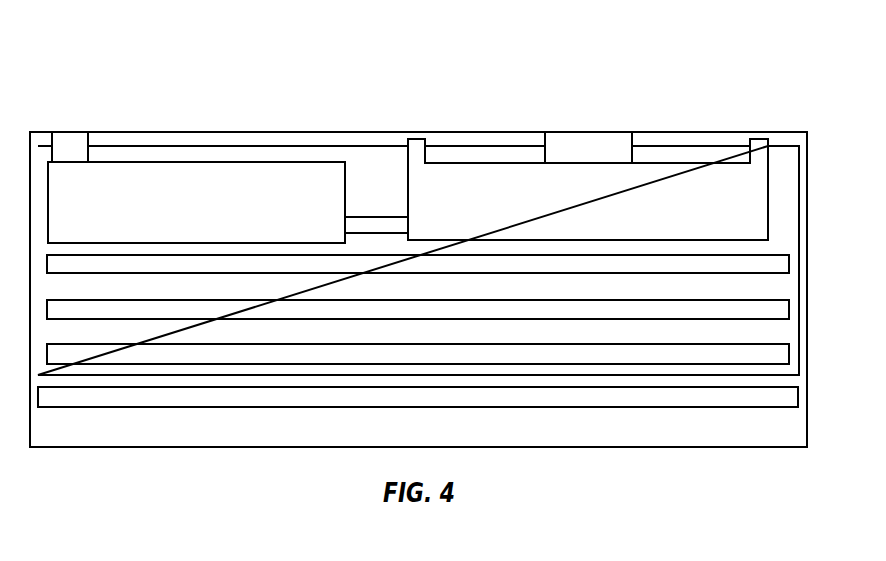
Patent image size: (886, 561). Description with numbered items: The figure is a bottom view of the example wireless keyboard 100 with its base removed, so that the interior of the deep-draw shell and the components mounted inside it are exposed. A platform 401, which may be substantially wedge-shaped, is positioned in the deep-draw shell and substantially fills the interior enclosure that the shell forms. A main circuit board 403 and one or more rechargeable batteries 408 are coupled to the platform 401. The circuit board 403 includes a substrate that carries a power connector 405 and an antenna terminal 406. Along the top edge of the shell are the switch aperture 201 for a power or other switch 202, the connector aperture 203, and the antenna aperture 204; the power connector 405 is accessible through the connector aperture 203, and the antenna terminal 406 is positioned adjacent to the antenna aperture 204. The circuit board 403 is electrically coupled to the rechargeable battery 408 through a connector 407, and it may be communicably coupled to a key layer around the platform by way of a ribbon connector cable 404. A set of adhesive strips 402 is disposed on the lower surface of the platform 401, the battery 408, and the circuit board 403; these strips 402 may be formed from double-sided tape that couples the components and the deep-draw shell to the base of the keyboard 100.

The wireless keyboard 100 is at (648, 478).
The switch aperture 201 is at (60, 112).
The switch 202 is at (79, 136).
The connector aperture 203 is at (418, 118).
The antenna aperture 204 is at (755, 118).
The platform 401 is at (800, 157).
The adhesive strips 402 is at (789, 264).
The main circuit board 403 is at (768, 183).
The ribbon connector cable 404 is at (580, 145).
The power connector 405 is at (418, 148).
The antenna terminal 406 is at (758, 149).
The connector 407 is at (365, 225).
The rechargeable battery 408 is at (233, 183).